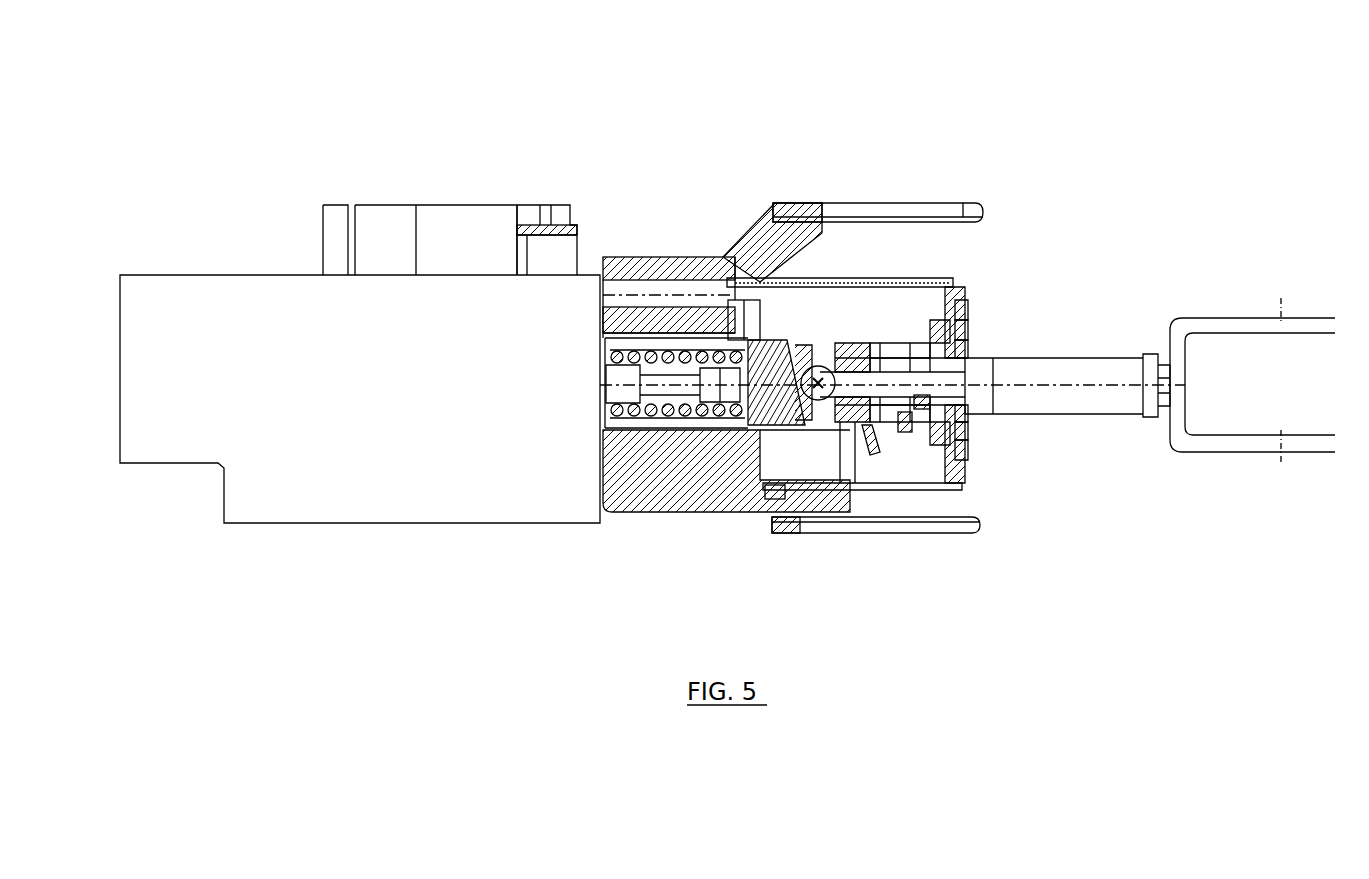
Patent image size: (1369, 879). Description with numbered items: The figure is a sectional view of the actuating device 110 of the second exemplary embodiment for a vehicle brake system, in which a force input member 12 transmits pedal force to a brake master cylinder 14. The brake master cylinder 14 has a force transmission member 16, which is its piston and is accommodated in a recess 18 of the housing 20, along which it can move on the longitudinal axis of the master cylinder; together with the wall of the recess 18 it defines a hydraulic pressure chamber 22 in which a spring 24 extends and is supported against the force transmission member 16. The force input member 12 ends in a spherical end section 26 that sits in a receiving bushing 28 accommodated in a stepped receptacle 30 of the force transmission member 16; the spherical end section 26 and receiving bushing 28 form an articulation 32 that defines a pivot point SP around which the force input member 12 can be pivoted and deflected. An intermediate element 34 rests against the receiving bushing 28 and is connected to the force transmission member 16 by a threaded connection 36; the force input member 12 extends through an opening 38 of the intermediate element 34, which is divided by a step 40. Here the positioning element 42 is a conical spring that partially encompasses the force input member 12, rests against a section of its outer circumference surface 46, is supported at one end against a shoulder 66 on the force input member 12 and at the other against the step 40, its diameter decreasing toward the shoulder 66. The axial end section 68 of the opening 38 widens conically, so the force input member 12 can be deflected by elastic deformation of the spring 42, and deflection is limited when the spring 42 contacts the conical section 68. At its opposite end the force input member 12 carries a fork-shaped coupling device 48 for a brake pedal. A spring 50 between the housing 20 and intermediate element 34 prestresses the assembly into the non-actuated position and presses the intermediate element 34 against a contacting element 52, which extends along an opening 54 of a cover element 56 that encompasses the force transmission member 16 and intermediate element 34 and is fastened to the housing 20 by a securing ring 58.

The actuating device 110 is at (1204, 146).
The force input member 12 is at (1093, 365).
The brake master cylinder 14 is at (742, 316).
The force transmission member 16 is at (765, 357).
The recess 18 is at (697, 343).
The housing 20 is at (722, 475).
The hydraulic pressure chamber 22 is at (642, 352).
The spring 24 is at (657, 405).
The spherical end section 26 is at (827, 392).
The receiving bushing 28 is at (800, 362).
The receptacle 30 is at (872, 352).
The articulation 32 is at (840, 338).
The intermediate element 34 is at (967, 340).
The threaded connection 36 is at (906, 420).
The opening 38 is at (963, 411).
The step 40 is at (950, 330).
The positioning element 42 is at (963, 403).
The outer circumference surface 46 is at (920, 402).
The coupling device 48 is at (1300, 327).
The spring 50 is at (873, 452).
The contacting element 52 is at (962, 347).
The opening 54 is at (966, 342).
The cover element 56 is at (933, 280).
The securing ring 58 is at (775, 495).
The shoulder 66 is at (965, 399).
The axial end section 68 is at (960, 358).
The pivot point SP is at (818, 386).